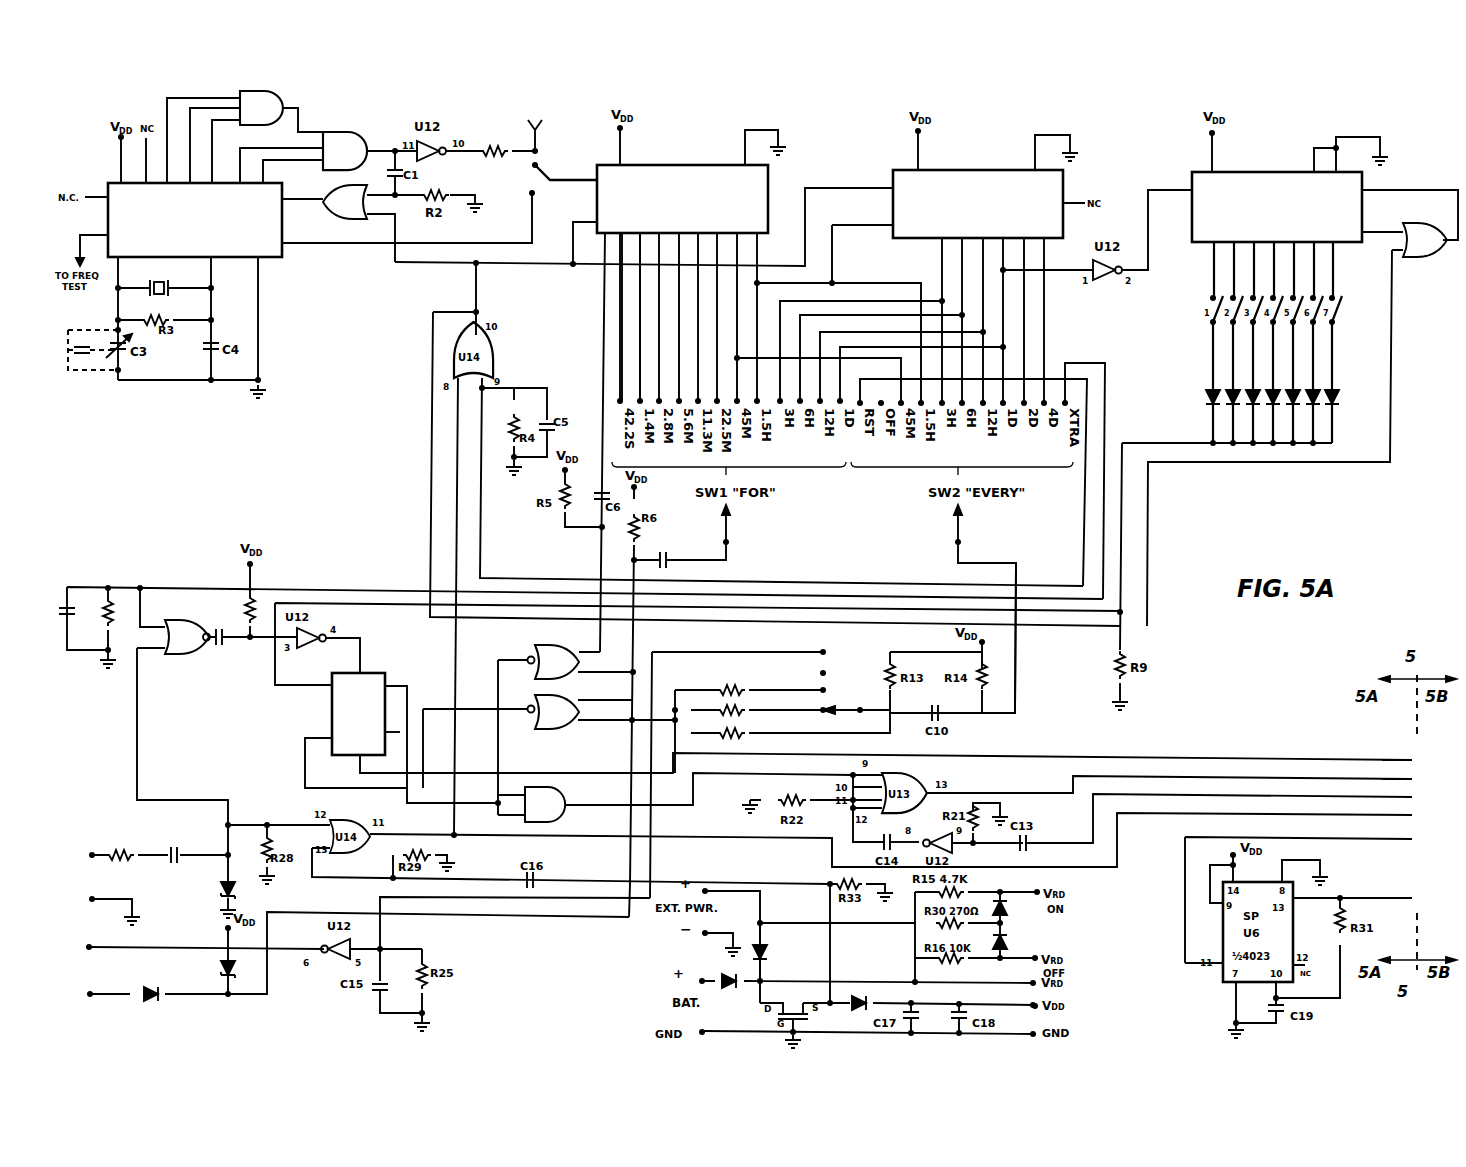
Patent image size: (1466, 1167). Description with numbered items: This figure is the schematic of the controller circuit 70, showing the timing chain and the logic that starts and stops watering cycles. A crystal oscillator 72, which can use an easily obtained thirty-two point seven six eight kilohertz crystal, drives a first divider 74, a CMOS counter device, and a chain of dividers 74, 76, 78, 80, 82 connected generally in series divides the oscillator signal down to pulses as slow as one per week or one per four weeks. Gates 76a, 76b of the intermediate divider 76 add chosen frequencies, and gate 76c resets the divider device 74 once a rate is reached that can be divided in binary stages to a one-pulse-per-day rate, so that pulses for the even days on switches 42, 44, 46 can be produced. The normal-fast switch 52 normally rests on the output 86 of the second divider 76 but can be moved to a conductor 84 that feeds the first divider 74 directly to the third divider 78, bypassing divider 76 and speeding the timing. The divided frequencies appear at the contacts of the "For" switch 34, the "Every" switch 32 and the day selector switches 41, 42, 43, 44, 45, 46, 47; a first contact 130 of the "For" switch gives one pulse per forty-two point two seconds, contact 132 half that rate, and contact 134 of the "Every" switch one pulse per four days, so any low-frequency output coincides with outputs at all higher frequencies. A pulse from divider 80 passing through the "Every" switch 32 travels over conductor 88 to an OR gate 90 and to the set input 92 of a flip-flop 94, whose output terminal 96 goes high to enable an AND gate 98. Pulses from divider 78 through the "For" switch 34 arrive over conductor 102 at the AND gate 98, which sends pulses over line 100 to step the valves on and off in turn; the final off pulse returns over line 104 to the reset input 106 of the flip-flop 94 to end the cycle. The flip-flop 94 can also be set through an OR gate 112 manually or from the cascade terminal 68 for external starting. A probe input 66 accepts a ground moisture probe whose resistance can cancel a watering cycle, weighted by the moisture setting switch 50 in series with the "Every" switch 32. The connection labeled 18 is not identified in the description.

The counter output line 18 is at (1388, 184).
The "Every" switch 32 is at (940, 510).
The "For" switch 34 is at (741, 505).
The day selector switch 41 is at (1213, 327).
The day selector switch 42 is at (1233, 324).
The day selector switch 43 is at (1253, 327).
The day selector switch 44 is at (1273, 327).
The day selector switch 45 is at (1293, 338).
The day selector switch 46 is at (1313, 357).
The day selector switch 47 is at (1332, 377).
The moisture setting switch 50 is at (784, 678).
The normal-fast switch 52 is at (553, 158).
The probe input 66 is at (92, 986).
The cascade or external start terminal 68 is at (82, 856).
The circuit 70 is at (1392, 158).
The oscillator 72 is at (170, 278).
The first divider 74 is at (283, 258).
The second divider 76 is at (380, 130).
The divider gate 76a is at (286, 106).
The divider gate 76b is at (352, 128).
The reset gate 76c is at (336, 218).
The third divider 78 is at (696, 164).
The divider 80 is at (989, 169).
The divider 82 is at (1240, 171).
The conductor 84 is at (505, 243).
The output of second divider 86 is at (523, 160).
The conductor 88 is at (594, 721).
The OR gate 90 is at (561, 721).
The set input 92 is at (305, 747).
The flip-flop 94 is at (330, 708).
The flip-flop output terminal 96 is at (379, 673).
The AND gate 98 is at (567, 815).
The line 100 is at (1240, 775).
The conductor 102 is at (634, 684).
The line 104 is at (1335, 762).
The reset input 106 is at (357, 762).
The OR gate 112 is at (178, 646).
The first contact of For switch 130 is at (620, 312).
The contact of For switch 132 is at (640, 333).
The contact of Every switch 134 is at (1074, 335).